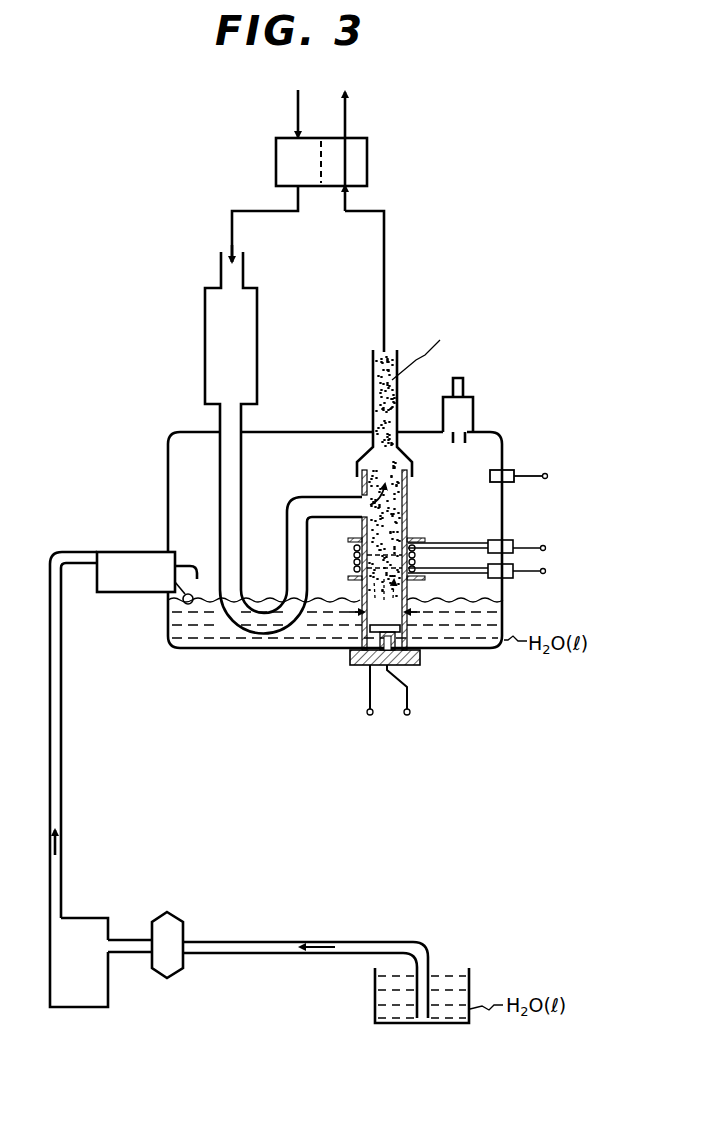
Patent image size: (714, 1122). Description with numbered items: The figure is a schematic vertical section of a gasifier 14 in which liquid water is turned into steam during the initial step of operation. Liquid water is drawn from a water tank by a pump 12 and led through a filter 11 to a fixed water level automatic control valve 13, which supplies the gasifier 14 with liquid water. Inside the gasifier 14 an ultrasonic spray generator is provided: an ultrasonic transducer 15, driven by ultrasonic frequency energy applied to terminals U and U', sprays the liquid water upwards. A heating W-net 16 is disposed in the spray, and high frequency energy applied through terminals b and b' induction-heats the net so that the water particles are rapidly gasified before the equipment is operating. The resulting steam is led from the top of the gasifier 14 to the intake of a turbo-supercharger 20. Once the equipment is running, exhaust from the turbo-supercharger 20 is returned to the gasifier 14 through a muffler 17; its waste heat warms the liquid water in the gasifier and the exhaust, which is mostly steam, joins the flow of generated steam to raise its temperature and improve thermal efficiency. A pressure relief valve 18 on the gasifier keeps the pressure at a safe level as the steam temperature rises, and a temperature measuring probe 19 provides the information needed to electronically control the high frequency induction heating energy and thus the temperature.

The filter 11 is at (180, 976).
The pump 12 is at (83, 1008).
The fixed water level automatic control valve 13 is at (110, 552).
The gasifier 14 is at (280, 650).
The ultrasonic transducer 15 is at (408, 628).
The heating W-net 16 is at (383, 550).
The muffler 17 is at (205, 322).
The pressure relief valve 18 is at (473, 405).
The temperature measuring probe 19 is at (505, 467).
The turbo-supercharger 20 is at (367, 163).